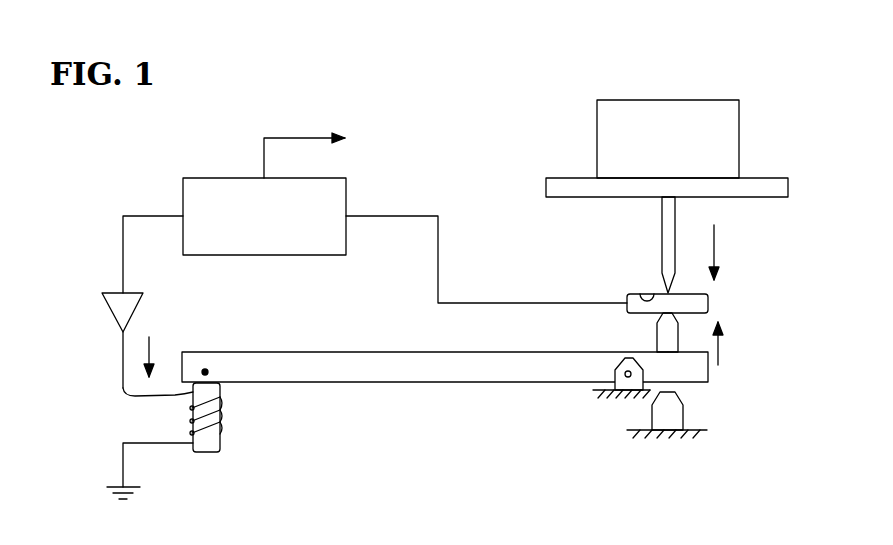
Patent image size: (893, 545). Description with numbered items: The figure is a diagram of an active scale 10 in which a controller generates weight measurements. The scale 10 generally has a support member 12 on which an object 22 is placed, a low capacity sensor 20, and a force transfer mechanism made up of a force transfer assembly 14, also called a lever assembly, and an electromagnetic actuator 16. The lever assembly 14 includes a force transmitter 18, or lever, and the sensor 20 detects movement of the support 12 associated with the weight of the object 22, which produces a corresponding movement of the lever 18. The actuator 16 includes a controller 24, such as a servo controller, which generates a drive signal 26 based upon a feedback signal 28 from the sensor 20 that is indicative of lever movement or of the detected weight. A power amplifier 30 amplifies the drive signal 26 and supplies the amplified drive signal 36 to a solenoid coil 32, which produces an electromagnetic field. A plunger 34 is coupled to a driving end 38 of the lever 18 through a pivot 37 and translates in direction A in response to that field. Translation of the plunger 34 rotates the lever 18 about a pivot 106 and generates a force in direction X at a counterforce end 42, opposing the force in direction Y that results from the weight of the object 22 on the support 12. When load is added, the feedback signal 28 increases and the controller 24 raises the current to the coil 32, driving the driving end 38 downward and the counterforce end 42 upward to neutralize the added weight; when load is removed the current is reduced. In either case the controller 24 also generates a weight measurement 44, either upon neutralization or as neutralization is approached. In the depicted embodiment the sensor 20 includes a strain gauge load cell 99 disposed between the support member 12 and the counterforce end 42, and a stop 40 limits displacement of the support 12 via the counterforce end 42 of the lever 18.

The active scale 10 is at (443, 50).
The support member 12 is at (696, 209).
The force transfer assembly 14 is at (730, 403).
The electromagnetic actuator 16 is at (387, 187).
The force transmitter 18 is at (345, 382).
The sensor 20 is at (708, 302).
The object 22 is at (682, 150).
The controller 24 is at (226, 178).
The drive signal 26 is at (120, 256).
The feedback signal 28 is at (440, 275).
The power amplifier 30 is at (82, 339).
The coil 32 is at (103, 455).
The plunger 34 is at (208, 452).
The amplified drive signal 36 is at (118, 370).
The pivot 37 is at (267, 406).
The driving end 38 is at (227, 327).
The stop 40 is at (620, 402).
The counterforce end 42 is at (610, 342).
The weight measurement 44 is at (286, 137).
The load cell 99 is at (647, 288).
The pivot 106 is at (650, 405).